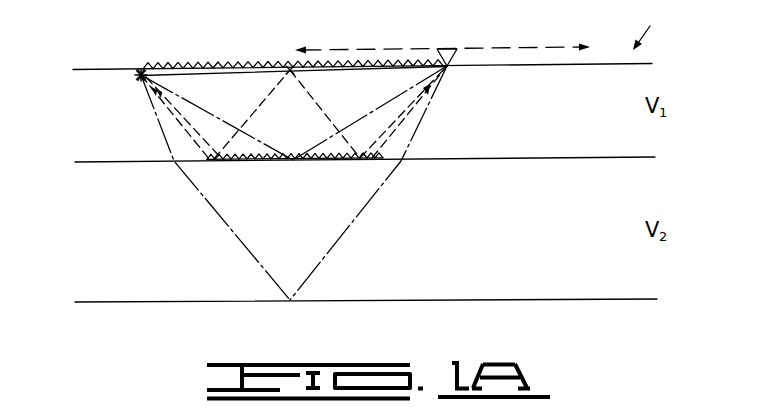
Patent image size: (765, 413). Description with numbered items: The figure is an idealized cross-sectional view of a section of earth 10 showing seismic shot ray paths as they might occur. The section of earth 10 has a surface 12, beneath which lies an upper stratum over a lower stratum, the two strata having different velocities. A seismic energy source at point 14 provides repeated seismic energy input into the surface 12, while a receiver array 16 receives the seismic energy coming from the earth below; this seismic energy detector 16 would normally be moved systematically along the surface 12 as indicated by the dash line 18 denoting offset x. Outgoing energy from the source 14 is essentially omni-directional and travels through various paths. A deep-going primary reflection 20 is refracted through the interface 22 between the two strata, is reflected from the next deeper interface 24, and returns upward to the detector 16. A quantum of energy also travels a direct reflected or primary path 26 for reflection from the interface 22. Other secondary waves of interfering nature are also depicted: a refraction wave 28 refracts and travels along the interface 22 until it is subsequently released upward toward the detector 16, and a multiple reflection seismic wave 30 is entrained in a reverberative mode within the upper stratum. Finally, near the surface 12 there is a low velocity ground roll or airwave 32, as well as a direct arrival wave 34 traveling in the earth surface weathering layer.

The section of earth 10 is at (649, 27).
The surface 12 is at (88, 68).
The seismic energy source 14 is at (139, 71).
The receiver array 16 is at (450, 49).
The dash line 18 is at (373, 47).
The deep-going primary reflection 20 is at (223, 225).
The interface 22 is at (518, 157).
The next deeper interface 24 is at (473, 300).
The direct reflected or primary path 26 is at (233, 123).
The refraction wave 28 is at (184, 129).
The multiple reflection seismic wave 30 is at (255, 126).
The low velocity ground roll or airwave 32 is at (240, 63).
The direct arrival wave 34 is at (197, 72).